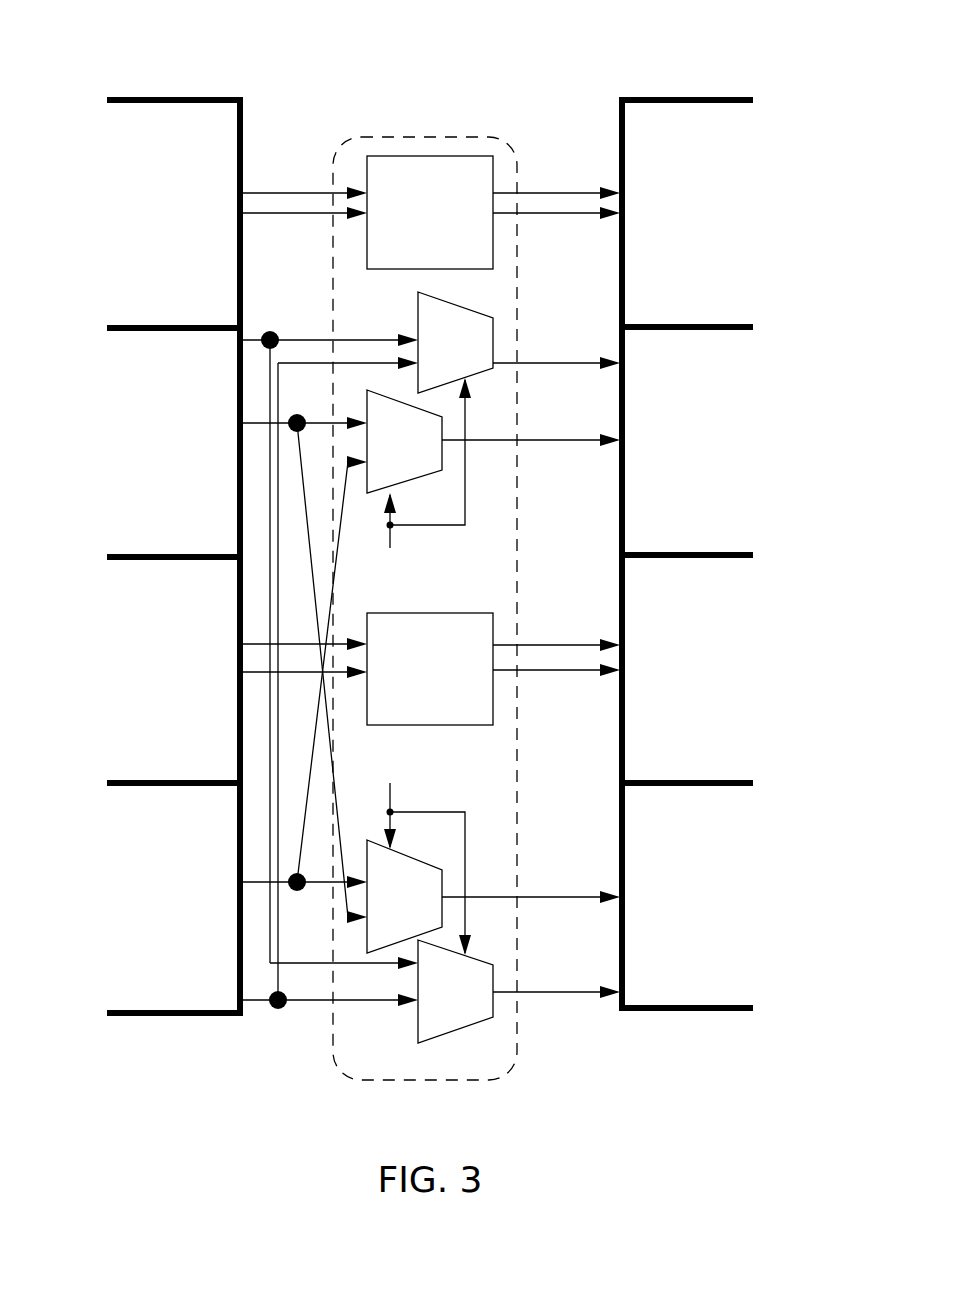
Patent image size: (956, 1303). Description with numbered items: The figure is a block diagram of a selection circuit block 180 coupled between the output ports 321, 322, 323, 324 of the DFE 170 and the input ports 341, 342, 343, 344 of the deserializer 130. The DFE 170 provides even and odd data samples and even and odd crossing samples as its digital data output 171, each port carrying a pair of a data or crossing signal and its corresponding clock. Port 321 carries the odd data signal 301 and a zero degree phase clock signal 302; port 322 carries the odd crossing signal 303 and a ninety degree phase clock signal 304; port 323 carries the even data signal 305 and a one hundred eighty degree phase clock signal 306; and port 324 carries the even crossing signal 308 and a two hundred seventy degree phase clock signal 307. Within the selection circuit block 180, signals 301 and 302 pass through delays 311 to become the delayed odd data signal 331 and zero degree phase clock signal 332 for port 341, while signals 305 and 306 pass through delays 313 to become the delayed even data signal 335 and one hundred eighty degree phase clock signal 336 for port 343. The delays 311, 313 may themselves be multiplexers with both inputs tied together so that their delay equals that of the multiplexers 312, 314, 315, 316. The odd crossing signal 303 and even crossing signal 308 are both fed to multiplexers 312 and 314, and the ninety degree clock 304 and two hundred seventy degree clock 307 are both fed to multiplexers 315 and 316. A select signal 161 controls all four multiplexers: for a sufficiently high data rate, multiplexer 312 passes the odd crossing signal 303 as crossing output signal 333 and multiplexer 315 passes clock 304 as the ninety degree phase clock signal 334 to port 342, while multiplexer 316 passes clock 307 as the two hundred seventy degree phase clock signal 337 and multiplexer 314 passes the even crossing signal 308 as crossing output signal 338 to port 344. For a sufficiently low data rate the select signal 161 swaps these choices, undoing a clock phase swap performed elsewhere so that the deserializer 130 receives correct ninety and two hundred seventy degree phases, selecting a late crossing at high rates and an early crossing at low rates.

The deserializer 130 is at (313, 67).
The DFE 170 is at (62, 67).
The digital data output 171 is at (245, 114).
The selection circuit block 180 is at (518, 1058).
The select signal 161 is at (393, 548).
The odd data signal 301 is at (257, 193).
The 0 degree phase clock signal 302 is at (257, 214).
The odd crossing signal 303 is at (250, 338).
The 90 degree phase clock signal 304 is at (237, 430).
The even data signal 305 is at (237, 640).
The 180 degree phase clock signal 306 is at (237, 676).
The 270 degree phase clock signal 307 is at (237, 886).
The even crossing signal 308 is at (243, 1005).
The delays 311 is at (430, 212).
The multiplexer 312 is at (455, 342).
The delays 313 is at (430, 669).
The multiplexer 314 is at (455, 991).
The multiplexer 315 is at (404, 441).
The multiplexer 316 is at (404, 896).
The port 321 is at (99, 103).
The port 322 is at (99, 333).
The port 323 is at (99, 560).
The port 324 is at (99, 788).
The odd data signal 331 is at (537, 192).
The 0 degree phase clock signal 332 is at (537, 215).
The crossing output signal 333 is at (537, 362).
The 90 degree phase clock signal 334 is at (537, 439).
The even data signal 335 is at (530, 643).
The 180 degree phase clock signal 336 is at (530, 672).
The 270 degree phase clock signal 337 is at (530, 898).
The crossing output signal 338 is at (530, 993).
The port 341 is at (760, 103).
The port 342 is at (760, 333).
The port 343 is at (760, 560).
The port 344 is at (760, 788).